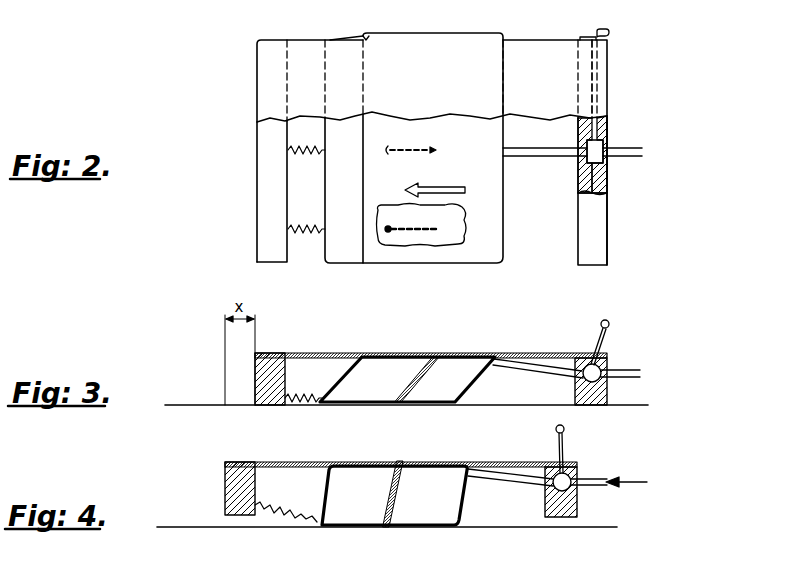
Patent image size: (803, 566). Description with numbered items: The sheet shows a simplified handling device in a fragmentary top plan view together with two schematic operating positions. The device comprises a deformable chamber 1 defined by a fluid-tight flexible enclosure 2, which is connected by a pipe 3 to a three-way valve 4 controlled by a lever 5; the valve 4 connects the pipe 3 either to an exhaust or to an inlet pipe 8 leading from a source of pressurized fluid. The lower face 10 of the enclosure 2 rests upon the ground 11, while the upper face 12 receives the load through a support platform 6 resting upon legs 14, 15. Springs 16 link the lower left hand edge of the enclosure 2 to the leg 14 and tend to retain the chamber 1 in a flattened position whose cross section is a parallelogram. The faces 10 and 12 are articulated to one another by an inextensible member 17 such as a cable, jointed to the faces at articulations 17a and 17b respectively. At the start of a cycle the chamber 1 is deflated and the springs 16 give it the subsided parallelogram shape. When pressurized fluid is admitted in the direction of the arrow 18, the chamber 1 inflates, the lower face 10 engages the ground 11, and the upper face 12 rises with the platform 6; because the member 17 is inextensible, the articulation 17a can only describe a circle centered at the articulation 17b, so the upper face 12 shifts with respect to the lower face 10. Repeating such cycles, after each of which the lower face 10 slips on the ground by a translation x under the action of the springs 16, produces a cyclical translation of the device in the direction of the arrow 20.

In FIG. 3, the deformable chamber 1 is at (407, 379).
In FIG. 4, the deformable chamber 1 is at (394, 495).
In FIG. 2, the fluid-tight flexible enclosure 2 is at (503, 230).
In FIG. 2, the pipe 3 is at (546, 158).
In FIG. 2, the three-way valve 4 is at (586, 148).
In FIG. 2, the lever 5 is at (593, 52).
In FIG. 2, the support platform 6 is at (530, 58).
In FIG. 3, the support platform 6 is at (548, 356).
In FIG. 2, the inlet pipe 8 is at (628, 158).
In FIG. 2, the lower face 10 is at (445, 247).
In FIG. 3, the ground 11 is at (182, 405).
In FIG. 4, the ground 11 is at (169, 527).
In FIG. 2, the upper face 12 is at (384, 262).
In FIG. 3, the upper face 12 is at (387, 355).
In FIG. 2, the leg 14 is at (257, 241).
In FIG. 2, the leg 15 is at (602, 240).
In FIG. 2, the springs 16 is at (303, 148).
In FIG. 3, the springs 16 is at (305, 397).
In FIG. 4, the springs 16 is at (285, 508).
In FIG. 2, the inextensible member 17 is at (428, 147).
In FIG. 3, the inextensible member 17 is at (418, 371).
In FIG. 4, the inextensible member 17 is at (403, 490).
In FIG. 3, the articulation 17a is at (428, 360).
In FIG. 4, the articulation 17a is at (405, 466).
In FIG. 3, the articulation 17b is at (392, 404).
In FIG. 4, the articulation 17b is at (388, 527).
In FIG. 4, the arrow 18 is at (627, 480).
In FIG. 2, the arrow 20 is at (431, 186).